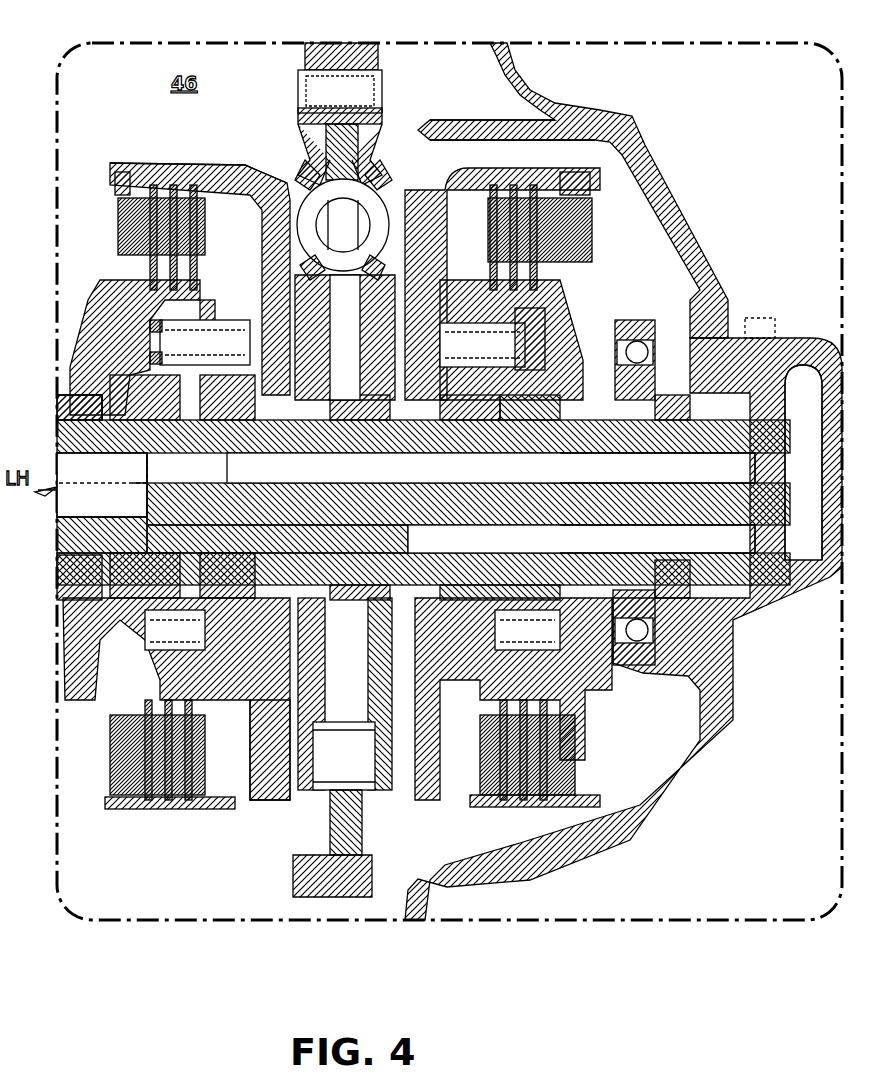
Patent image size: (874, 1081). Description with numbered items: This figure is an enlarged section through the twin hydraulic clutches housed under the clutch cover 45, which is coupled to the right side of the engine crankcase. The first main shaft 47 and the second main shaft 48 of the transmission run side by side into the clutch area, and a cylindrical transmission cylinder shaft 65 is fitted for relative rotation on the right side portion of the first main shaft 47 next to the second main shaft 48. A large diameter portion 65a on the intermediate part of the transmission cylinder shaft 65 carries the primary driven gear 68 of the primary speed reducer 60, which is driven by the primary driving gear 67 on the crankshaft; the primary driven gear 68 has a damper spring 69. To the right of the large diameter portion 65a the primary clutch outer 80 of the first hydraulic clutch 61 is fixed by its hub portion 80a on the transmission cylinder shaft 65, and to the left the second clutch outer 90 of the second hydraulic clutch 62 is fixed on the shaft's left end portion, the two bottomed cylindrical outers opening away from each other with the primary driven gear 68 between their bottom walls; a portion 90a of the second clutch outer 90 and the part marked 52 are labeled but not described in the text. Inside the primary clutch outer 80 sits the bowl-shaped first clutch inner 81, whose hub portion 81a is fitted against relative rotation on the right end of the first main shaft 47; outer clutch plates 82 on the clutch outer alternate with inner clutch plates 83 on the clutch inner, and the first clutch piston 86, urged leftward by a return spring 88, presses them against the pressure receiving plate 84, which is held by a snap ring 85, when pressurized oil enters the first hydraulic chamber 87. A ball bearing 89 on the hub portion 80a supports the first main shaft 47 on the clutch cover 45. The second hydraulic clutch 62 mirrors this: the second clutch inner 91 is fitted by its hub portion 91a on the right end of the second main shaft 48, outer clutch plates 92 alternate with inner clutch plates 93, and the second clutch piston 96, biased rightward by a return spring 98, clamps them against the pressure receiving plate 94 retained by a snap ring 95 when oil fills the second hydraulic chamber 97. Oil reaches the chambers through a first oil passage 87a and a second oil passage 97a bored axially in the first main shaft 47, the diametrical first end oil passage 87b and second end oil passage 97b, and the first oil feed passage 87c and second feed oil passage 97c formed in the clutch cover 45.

The clutch cover 45 is at (625, 130).
The first main shaft 47 is at (70, 600).
The second main shaft 48 is at (75, 340).
The input shaft end 52 is at (102, 485).
The primary speed reducer 60 is at (388, 70).
The first hydraulic clutch 61 is at (578, 115).
The second hydraulic clutch 62 is at (148, 160).
The transmission cylinder shaft 65 is at (485, 422).
The large diameter portion 65a is at (207, 330).
The primary driving gear 67 is at (300, 58).
The primary driven gear 68 is at (360, 135).
The damper spring 69 is at (380, 213).
The primary clutch outer 80 is at (505, 165).
The hub portion 80a is at (568, 600).
The first clutch inner 81 is at (580, 278).
The hub portion 81a is at (628, 665).
The outer clutch plates 82 is at (520, 800).
The inner clutch plates 83 is at (482, 333).
The pressure receiving plate 84 is at (580, 228).
The snap ring 85 is at (575, 195).
The first clutch piston 86 is at (440, 705).
The first hydraulic chamber 87 is at (408, 785).
The first oil passage 87a is at (657, 527).
The first end oil passage 87b is at (442, 555).
The first oil feed passage 87c is at (755, 312).
The return spring 88 is at (545, 330).
The ball bearing 89 is at (637, 330).
The second clutch outer 90 is at (200, 168).
The first clutch piston chamber 90a is at (128, 600).
The second clutch inner 91 is at (105, 280).
The hub portion 91a is at (90, 620).
The outer clutch plates 92 is at (165, 805).
The inner clutch plates 93 is at (205, 342).
The pressure receiving plate 94 is at (122, 225).
The snap ring 95 is at (125, 172).
The second clutch piston 96 is at (248, 670).
The second hydraulic chamber 97 is at (278, 785).
The second oil passage 97a is at (657, 468).
The second end oil passage 97b is at (491, 468).
The second feed oil passage 97c is at (805, 390).
The return spring 98 is at (150, 332).